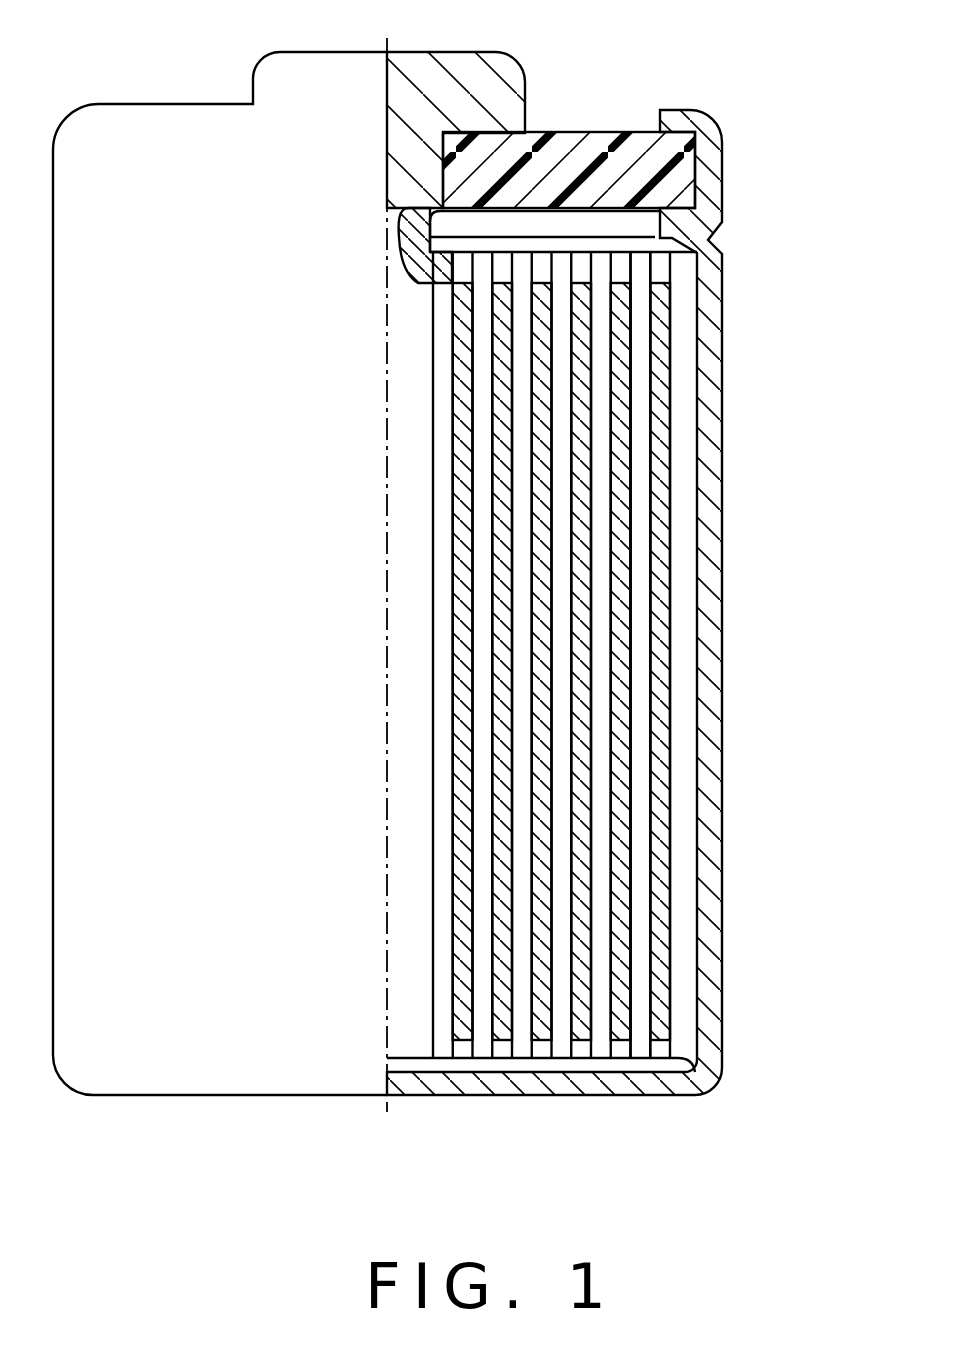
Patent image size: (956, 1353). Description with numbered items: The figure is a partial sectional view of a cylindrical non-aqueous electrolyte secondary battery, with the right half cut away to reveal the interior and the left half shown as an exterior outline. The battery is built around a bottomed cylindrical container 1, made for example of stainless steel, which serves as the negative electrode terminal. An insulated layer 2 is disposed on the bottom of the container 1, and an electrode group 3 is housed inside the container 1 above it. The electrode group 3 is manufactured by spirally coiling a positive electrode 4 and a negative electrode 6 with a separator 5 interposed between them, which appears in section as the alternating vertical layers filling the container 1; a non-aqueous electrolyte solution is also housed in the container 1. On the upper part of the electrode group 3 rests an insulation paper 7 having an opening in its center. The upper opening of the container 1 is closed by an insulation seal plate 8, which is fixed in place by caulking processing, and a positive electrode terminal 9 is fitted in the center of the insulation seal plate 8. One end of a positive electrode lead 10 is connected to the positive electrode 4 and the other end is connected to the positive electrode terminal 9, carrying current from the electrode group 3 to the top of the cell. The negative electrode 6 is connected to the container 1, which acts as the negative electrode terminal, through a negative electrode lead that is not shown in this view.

The bottomed cylindrical container 1 is at (705, 961).
The insulated layer 2 is at (631, 1062).
The electrode group 3 is at (800, 355).
The positive electrode 4 is at (621, 381).
The separator 5 is at (642, 443).
The negative electrode 6 is at (657, 503).
The insulation paper 7 is at (672, 247).
The insulation seal plate 8 is at (596, 132).
The positive electrode terminal 9 is at (444, 62).
The positive electrode lead 10 is at (415, 258).